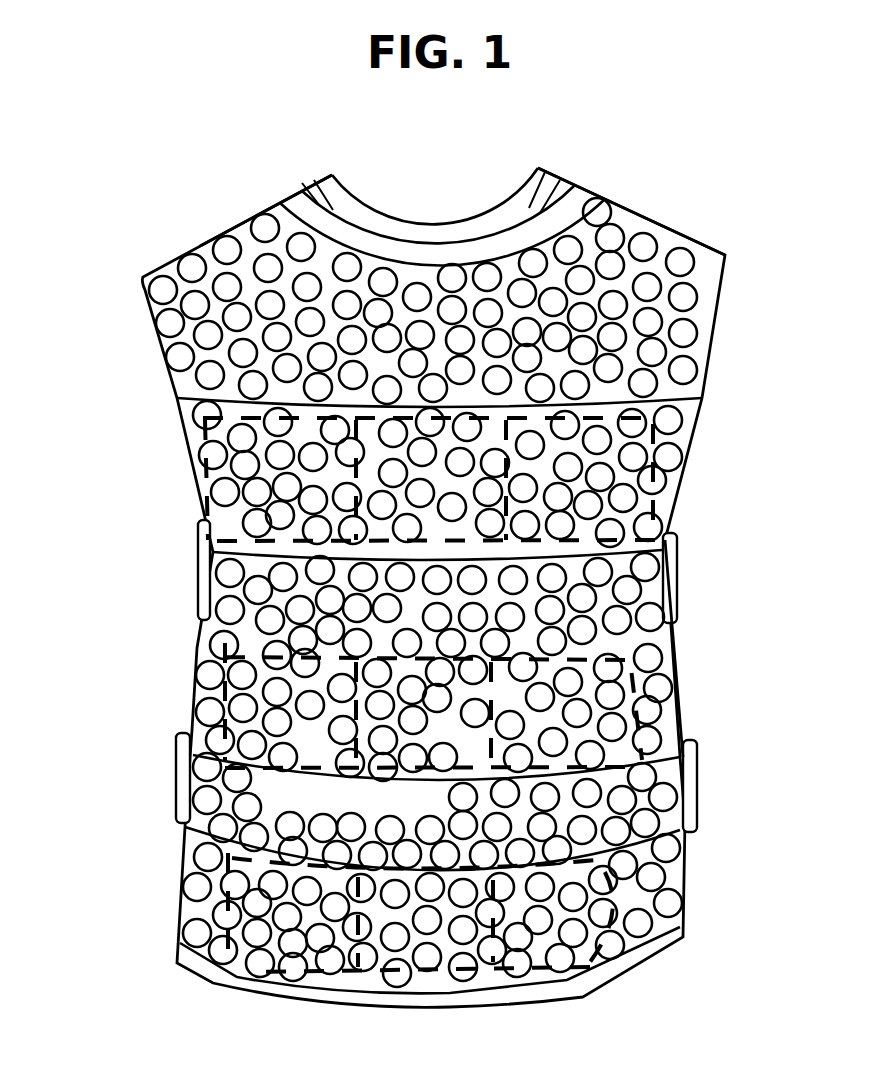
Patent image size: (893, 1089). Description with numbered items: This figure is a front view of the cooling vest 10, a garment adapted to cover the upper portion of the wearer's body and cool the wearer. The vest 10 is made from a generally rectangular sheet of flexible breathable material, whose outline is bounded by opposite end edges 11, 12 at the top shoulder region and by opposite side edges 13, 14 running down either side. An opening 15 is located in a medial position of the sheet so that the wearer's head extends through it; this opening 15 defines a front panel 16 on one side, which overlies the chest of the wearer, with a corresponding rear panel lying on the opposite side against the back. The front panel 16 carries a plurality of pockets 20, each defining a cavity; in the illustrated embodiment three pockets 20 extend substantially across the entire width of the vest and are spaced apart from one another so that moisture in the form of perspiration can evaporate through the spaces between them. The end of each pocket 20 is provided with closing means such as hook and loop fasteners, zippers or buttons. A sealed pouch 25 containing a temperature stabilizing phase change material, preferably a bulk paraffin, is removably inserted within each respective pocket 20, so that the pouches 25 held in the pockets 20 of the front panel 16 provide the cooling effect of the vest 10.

The cooling vest 10 is at (190, 220).
The end edge 11 is at (280, 202).
The end edge 12 is at (635, 208).
The side edge 13 is at (192, 668).
The side edge 14 is at (682, 705).
The opening 15 is at (372, 210).
The front panel 16 is at (675, 396).
The pocket 20 is at (202, 433).
The sealed pouch 25 is at (213, 472).